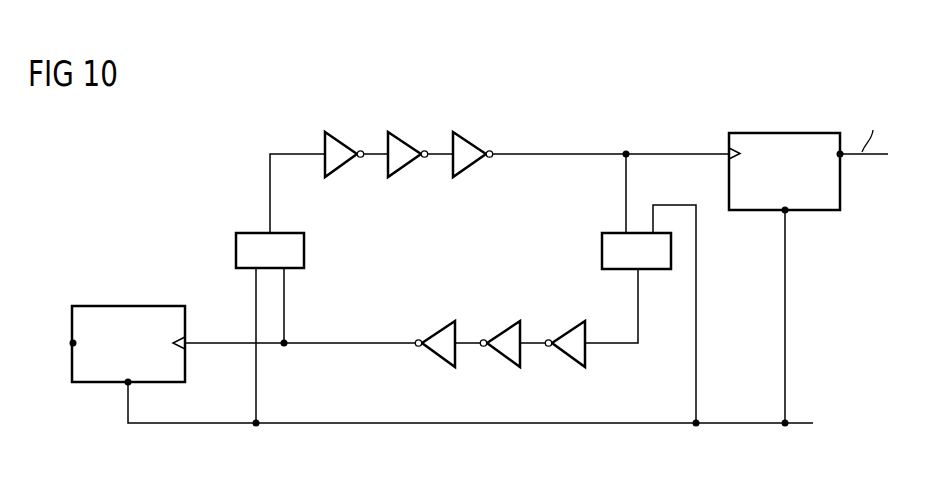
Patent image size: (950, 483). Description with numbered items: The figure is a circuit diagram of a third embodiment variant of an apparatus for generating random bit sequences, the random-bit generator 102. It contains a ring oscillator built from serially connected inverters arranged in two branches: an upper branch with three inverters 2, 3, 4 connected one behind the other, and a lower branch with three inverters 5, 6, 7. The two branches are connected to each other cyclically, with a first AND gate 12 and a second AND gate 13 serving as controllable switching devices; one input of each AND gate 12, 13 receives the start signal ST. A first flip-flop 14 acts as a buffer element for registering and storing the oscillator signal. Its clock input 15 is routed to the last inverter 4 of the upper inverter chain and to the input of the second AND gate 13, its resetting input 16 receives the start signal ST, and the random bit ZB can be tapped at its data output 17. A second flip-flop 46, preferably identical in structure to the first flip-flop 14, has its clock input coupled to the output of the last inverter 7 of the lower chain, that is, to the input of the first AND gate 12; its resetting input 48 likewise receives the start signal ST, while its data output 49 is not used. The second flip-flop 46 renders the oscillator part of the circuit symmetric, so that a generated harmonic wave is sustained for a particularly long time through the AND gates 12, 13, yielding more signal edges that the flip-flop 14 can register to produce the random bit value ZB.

The random-bit generator 102 is at (216, 133).
The inverter 2 is at (345, 140).
The inverter 3 is at (410, 140).
The inverter 4 is at (475, 140).
The inverter 5 is at (563, 360).
The inverter 6 is at (498, 360).
The inverter 7 is at (433, 360).
The first AND gate 12 is at (304, 250).
The second AND gate 13 is at (602, 250).
The first flip-flop 14 is at (783, 133).
The clock input 15 is at (727, 155).
The resetting input 16 is at (787, 212).
The data output 17 is at (187, 345).
The second flip-flop 46 is at (125, 305).
The resetting input 48 is at (127, 383).
The data output 49 is at (72, 345).